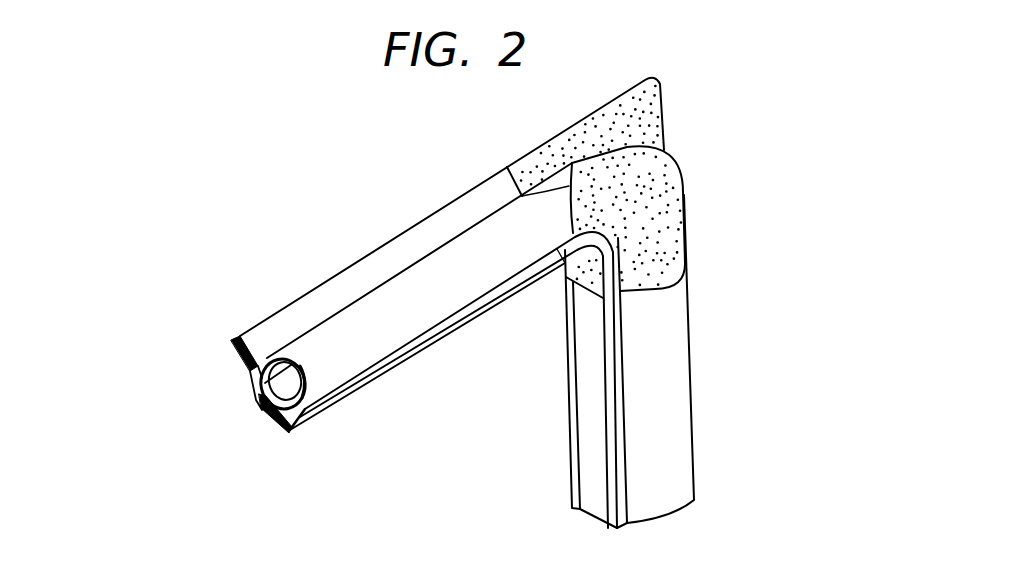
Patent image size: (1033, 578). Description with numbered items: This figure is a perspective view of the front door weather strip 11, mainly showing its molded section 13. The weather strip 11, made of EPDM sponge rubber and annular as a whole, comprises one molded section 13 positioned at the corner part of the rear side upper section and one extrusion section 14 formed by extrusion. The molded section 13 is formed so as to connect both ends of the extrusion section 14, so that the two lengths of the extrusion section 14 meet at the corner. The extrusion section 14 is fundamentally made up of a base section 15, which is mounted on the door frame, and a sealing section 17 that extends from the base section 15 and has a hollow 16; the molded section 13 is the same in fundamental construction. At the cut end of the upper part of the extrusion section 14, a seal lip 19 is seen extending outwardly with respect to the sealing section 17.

The front door weather strip 11 is at (374, 194).
The molded section 13 is at (684, 204).
The extrusion section 14 is at (313, 287).
The base section 15 is at (271, 416).
The hollow 16 is at (278, 388).
The sealing section 17 is at (304, 381).
The seal lip 19 is at (232, 347).